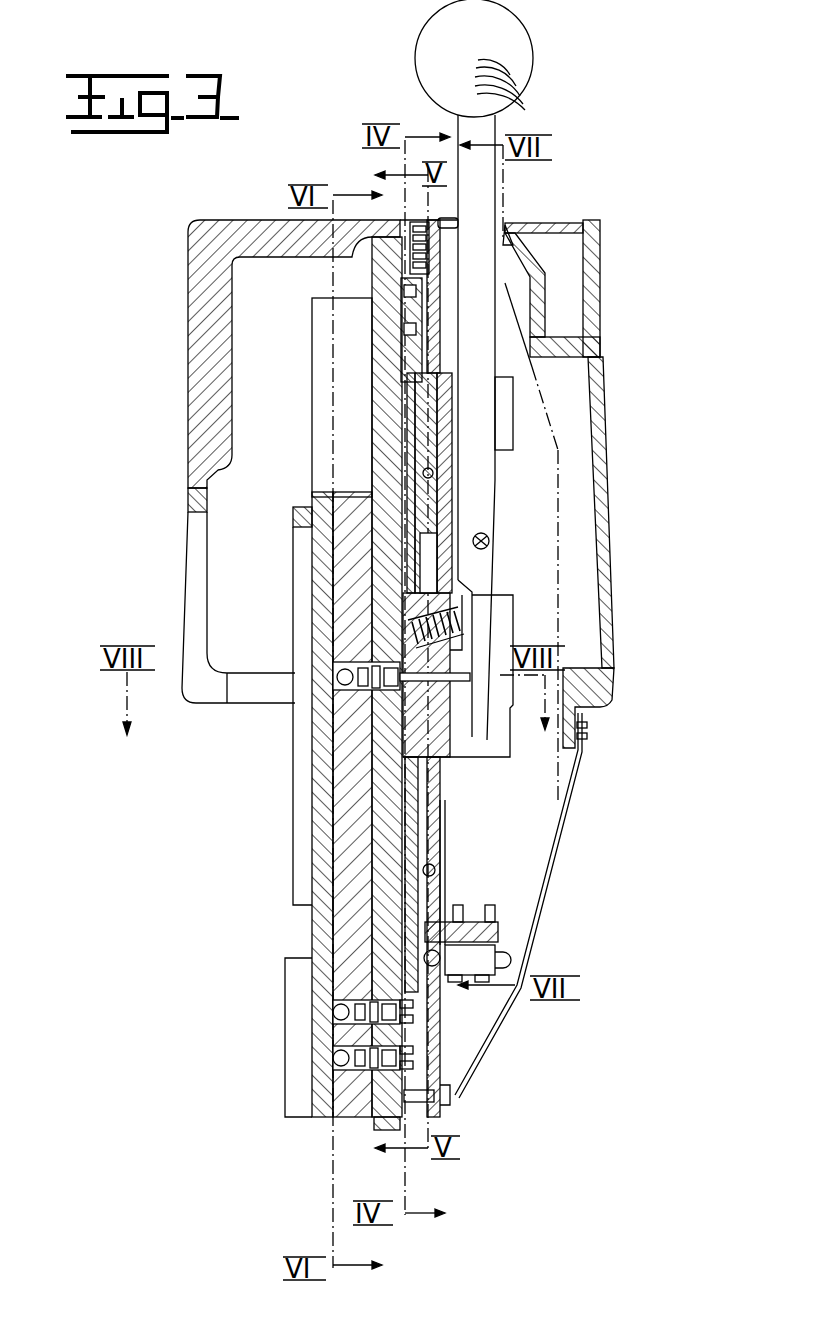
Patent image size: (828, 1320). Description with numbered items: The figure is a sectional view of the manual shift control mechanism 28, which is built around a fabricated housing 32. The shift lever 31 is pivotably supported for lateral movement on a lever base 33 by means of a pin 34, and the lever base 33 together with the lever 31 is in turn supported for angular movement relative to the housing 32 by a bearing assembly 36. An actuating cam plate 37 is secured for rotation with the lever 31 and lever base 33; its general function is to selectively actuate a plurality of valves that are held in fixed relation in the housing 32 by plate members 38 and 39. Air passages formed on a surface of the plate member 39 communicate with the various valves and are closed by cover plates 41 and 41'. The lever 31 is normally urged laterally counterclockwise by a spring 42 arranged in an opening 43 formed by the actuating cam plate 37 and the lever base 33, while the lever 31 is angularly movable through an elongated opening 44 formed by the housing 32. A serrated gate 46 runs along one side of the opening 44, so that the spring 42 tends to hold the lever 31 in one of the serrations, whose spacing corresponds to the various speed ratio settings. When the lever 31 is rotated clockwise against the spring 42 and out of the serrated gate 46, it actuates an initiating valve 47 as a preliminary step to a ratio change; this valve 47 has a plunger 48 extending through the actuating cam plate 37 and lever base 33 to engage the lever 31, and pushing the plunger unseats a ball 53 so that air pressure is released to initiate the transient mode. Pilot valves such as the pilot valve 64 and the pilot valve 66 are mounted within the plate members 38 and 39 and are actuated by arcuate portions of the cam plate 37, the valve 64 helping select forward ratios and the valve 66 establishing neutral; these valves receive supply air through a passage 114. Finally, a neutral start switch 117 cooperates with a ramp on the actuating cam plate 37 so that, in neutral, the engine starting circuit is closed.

The manual shift control mechanism 28 is at (635, 275).
The lever 31 is at (497, 128).
The housing 32 is at (225, 236).
The lever base 33 is at (500, 742).
The pin 34 is at (487, 538).
The bearing assembly 36 is at (452, 841).
The actuating cam plate 37 is at (402, 360).
The plate member 38 is at (382, 282).
The plate member 39 is at (345, 840).
The cover plate 41 is at (286, 804).
The cover plate 41' is at (273, 1037).
The spring 42 is at (466, 645).
The opening 43 is at (455, 622).
The elongated opening 44 is at (502, 232).
The serrated gate 46 is at (460, 238).
The initiating valve 47 is at (345, 698).
The plunger 48 is at (460, 742).
The ball 53 is at (336, 668).
The pilot valve 64 is at (327, 1060).
The pilot valve 66 is at (330, 1012).
The passage 114 is at (336, 532).
The neutral start switch 117 is at (512, 940).